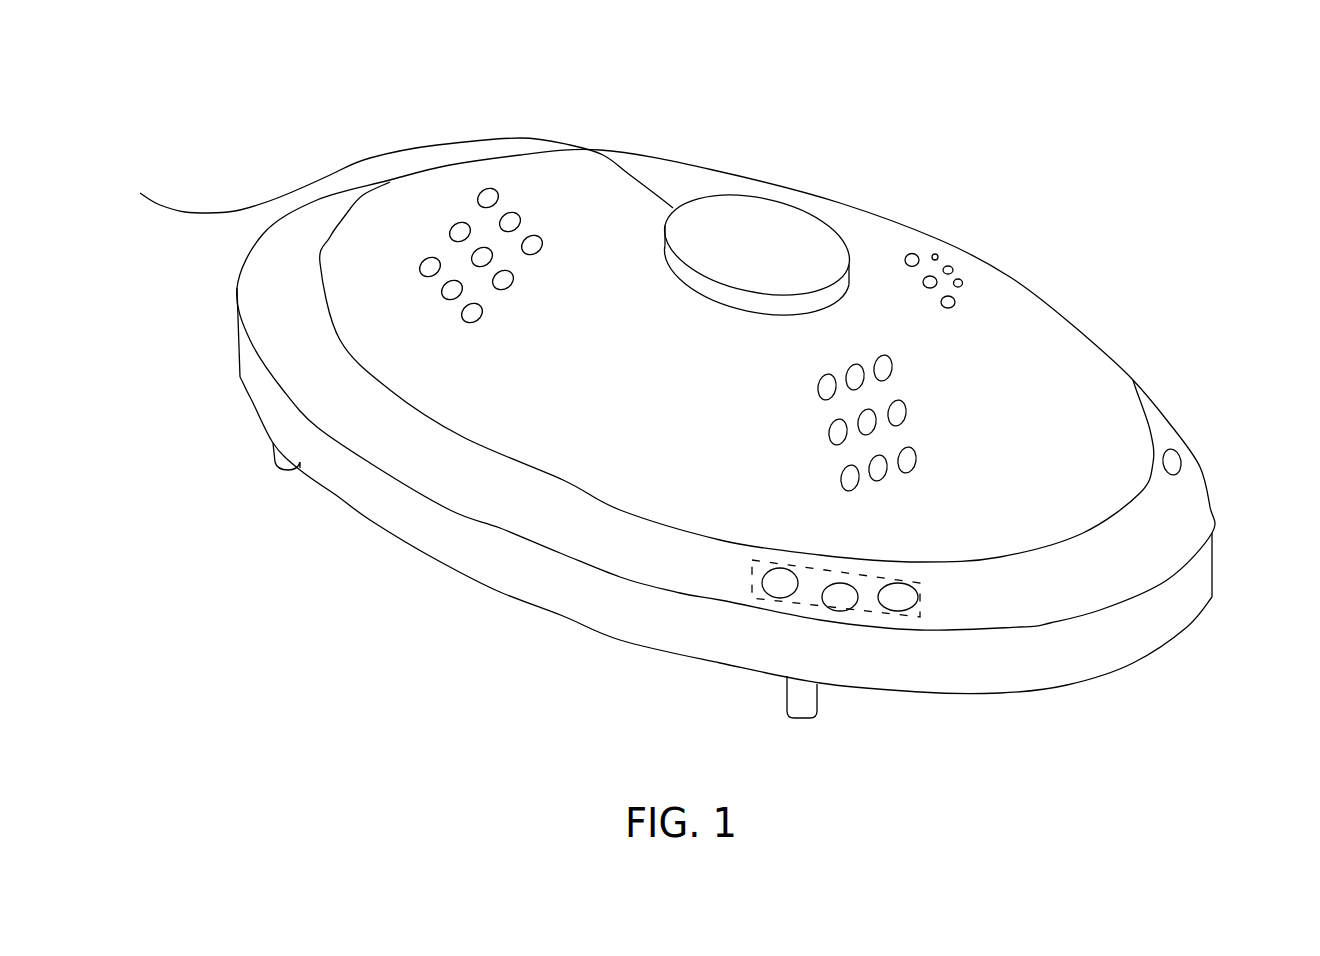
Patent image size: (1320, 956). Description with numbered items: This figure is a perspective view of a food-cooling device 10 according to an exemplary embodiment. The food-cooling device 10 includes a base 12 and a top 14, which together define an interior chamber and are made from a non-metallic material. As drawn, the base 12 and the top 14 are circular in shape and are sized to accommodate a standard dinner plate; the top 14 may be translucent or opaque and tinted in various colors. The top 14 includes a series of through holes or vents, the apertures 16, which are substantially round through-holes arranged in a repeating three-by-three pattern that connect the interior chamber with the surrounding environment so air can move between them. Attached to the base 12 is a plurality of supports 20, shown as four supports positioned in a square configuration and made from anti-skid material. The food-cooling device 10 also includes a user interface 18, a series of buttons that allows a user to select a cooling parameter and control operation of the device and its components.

The food-cooling device 10 is at (1118, 84).
The base 12 is at (700, 421).
The top 14 is at (750, 370).
The apertures 16 is at (961, 247).
The user interface 18 is at (982, 566).
The supports 20 is at (545, 611).